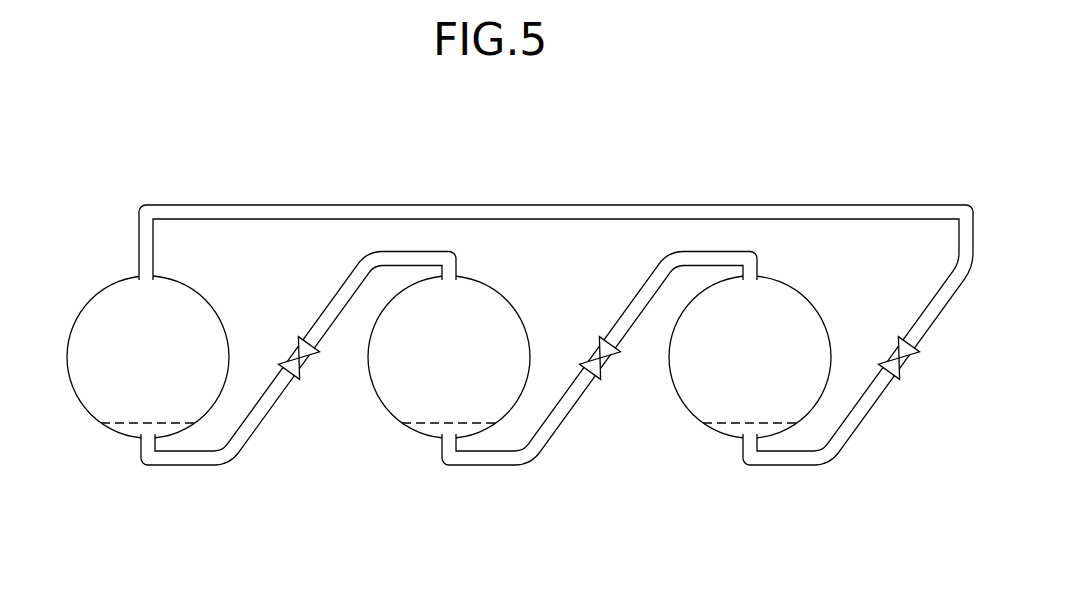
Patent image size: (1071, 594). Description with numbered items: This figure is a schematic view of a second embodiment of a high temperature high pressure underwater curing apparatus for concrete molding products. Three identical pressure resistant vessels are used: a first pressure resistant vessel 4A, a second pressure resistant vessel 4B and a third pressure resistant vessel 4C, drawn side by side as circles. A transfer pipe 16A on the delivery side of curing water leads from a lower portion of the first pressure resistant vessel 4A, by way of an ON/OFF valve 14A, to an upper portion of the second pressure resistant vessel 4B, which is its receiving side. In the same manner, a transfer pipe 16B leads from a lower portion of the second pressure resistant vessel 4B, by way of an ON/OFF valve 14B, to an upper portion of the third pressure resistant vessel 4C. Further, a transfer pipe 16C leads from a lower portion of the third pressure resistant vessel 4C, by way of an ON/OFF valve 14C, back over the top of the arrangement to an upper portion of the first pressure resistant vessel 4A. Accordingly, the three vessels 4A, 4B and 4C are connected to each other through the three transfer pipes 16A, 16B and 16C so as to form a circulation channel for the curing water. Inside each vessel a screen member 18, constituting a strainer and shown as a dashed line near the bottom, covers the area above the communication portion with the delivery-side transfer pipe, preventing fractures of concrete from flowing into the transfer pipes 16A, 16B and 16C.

The first pressure resistant vessel 4A is at (220, 323).
The second pressure resistant vessel 4B is at (520, 318).
The third pressure resistant vessel 4C is at (822, 317).
The ON/OFF valve 14A is at (300, 373).
The ON/OFF valve 14B is at (602, 373).
The ON/OFF valve 14C is at (903, 365).
The transfer pipe 16A is at (242, 447).
The transfer pipe 16B is at (545, 447).
The transfer pipe 16C is at (846, 446).
The screen member 18 is at (146, 423).